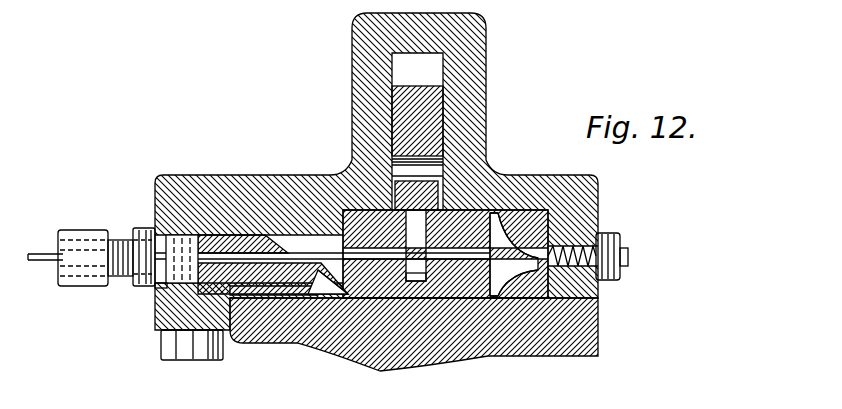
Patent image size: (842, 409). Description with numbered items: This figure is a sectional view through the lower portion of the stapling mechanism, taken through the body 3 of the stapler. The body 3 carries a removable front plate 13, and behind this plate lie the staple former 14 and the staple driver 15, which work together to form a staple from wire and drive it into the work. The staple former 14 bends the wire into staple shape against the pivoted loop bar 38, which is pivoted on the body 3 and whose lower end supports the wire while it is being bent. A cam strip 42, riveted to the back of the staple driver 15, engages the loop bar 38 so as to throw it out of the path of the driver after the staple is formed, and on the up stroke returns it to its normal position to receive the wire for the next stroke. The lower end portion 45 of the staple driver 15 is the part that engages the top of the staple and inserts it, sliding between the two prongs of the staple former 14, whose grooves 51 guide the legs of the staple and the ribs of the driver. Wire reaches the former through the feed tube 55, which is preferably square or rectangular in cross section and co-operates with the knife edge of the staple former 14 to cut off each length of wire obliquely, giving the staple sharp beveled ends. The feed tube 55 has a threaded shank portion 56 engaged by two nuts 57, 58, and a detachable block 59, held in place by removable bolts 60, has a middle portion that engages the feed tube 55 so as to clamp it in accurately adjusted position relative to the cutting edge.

The body 3 is at (344, 62).
The front plate 13 is at (592, 312).
The staple former 14 is at (338, 285).
The staple driver 15 is at (342, 196).
The loop bar 38 is at (408, 88).
The cam strip 42 is at (422, 182).
The lower end portion of the staple driver 45 is at (460, 205).
The grooves 51 is at (418, 262).
The feed tube 55 is at (170, 282).
The threaded shank portion 56 is at (126, 226).
The nut 57 is at (146, 278).
The nut 58 is at (80, 230).
The detachable block 59 is at (160, 326).
The bolts 60 is at (188, 348).